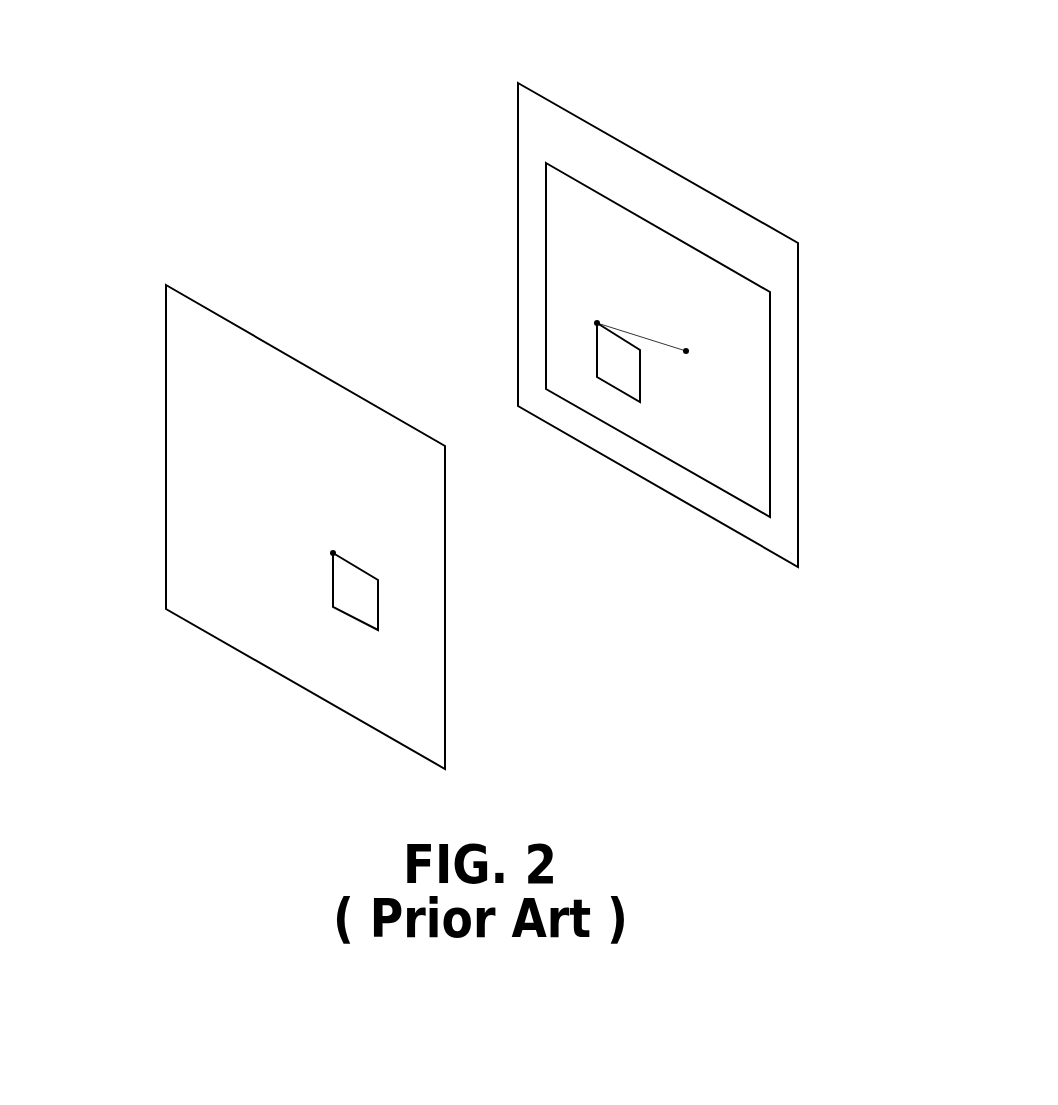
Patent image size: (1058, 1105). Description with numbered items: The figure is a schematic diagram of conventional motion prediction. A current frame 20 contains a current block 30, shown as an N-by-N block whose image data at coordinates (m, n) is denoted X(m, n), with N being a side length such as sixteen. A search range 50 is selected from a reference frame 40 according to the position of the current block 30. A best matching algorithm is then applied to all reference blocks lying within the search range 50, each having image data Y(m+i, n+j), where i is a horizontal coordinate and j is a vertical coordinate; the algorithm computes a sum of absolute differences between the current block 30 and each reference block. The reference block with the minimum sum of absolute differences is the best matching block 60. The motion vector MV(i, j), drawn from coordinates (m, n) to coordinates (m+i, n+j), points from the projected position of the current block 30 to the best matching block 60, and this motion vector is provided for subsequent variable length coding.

The current frame 20 is at (187, 460).
The current block 30 is at (355, 618).
The reference frame 40 is at (660, 180).
The search range 50 is at (810, 411).
The best matching block 60 is at (663, 400).